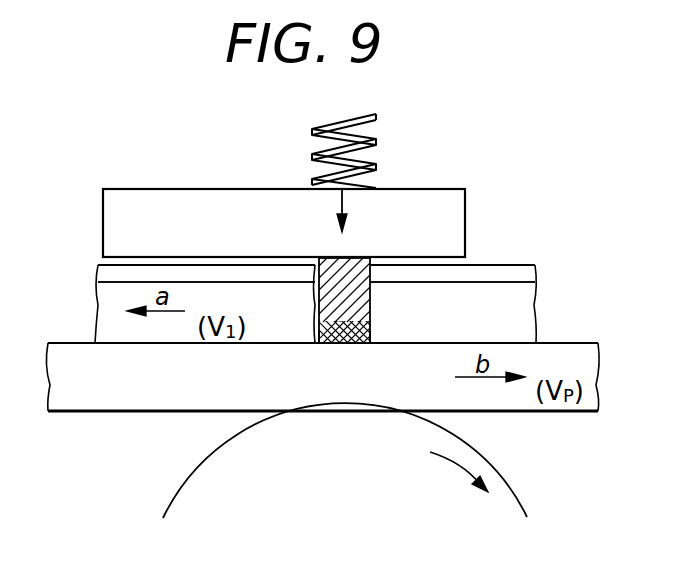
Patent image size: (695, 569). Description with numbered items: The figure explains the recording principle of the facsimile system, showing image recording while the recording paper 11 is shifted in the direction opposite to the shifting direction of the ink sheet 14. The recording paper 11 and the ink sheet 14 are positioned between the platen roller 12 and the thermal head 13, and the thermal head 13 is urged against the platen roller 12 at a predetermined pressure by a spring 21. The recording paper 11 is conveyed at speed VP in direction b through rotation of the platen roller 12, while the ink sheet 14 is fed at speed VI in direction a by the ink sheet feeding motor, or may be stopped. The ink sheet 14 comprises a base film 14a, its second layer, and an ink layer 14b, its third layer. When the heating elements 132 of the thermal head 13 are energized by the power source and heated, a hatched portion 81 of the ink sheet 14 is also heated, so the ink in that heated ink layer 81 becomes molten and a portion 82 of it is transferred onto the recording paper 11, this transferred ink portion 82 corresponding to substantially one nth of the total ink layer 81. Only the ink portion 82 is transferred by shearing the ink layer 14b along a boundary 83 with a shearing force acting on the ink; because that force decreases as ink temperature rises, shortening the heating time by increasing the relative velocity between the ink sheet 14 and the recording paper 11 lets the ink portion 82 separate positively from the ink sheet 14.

The recording paper 11 is at (599, 378).
The platen roller 12 is at (500, 500).
The thermal head 13 is at (446, 214).
The ink sheet 14 is at (366, 291).
The base film 14a is at (520, 275).
The ink layer 14b is at (518, 300).
The spring 21 is at (368, 135).
The hatched portion of the ink sheet 81 is at (297, 312).
The ink portion 82 is at (325, 343).
The boundary 83 is at (370, 343).
The heating elements 132 is at (327, 258).